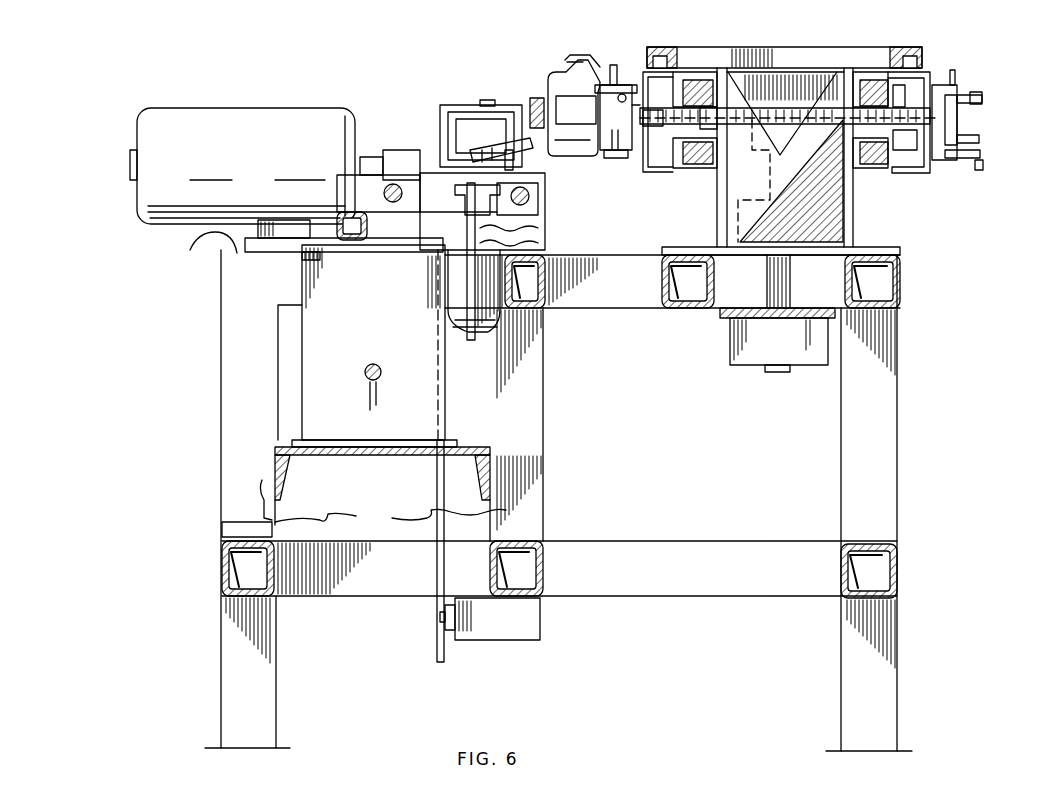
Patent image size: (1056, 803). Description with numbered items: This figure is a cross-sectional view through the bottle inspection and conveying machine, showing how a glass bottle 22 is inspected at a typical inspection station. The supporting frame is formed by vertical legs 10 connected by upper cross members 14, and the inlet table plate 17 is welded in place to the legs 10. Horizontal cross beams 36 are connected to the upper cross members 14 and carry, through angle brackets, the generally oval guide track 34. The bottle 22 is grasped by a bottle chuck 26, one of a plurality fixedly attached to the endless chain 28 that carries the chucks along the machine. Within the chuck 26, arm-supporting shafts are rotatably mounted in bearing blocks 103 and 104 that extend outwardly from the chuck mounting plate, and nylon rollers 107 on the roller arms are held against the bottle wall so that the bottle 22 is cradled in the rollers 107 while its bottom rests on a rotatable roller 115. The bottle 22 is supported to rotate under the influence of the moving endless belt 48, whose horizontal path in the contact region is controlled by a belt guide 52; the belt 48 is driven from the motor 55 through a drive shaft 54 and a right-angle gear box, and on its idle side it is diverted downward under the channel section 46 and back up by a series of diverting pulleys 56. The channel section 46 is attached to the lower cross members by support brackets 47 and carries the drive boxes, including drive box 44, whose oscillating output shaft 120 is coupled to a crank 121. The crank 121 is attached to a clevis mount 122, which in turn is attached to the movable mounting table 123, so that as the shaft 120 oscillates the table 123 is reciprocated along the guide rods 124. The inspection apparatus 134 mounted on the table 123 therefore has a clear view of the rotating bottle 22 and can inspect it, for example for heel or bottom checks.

The vertical legs 10 is at (218, 659).
The upper cross members 14 is at (708, 300).
The inlet table plate 17 is at (197, 244).
The glass bottle 22 is at (580, 90).
The bottle chuck 26 is at (640, 62).
The endless chain 28 is at (911, 122).
The guide track 34 is at (700, 44).
The horizontal cross beams 36 is at (672, 309).
The drive box 44 is at (295, 358).
The channel section 46 is at (490, 446).
The support brackets 47 is at (364, 508).
The endless belt 48 is at (550, 95).
The belt guide 52 is at (532, 94).
The drive shaft 54 is at (380, 154).
The motor 55 is at (310, 116).
The diverting pulleys 56 is at (436, 128).
The bearing block 103 is at (963, 112).
The bearing block 104 is at (606, 150).
The nylon rollers 107 is at (576, 110).
The rotatable roller 115 is at (607, 160).
The oscillating output shaft 120 is at (448, 326).
The crank 121 is at (545, 246).
The clevis mount 122 is at (545, 229).
The mounting table 123 is at (530, 160).
The guide rods 124 is at (393, 200).
The inspection apparatus 134 is at (520, 125).